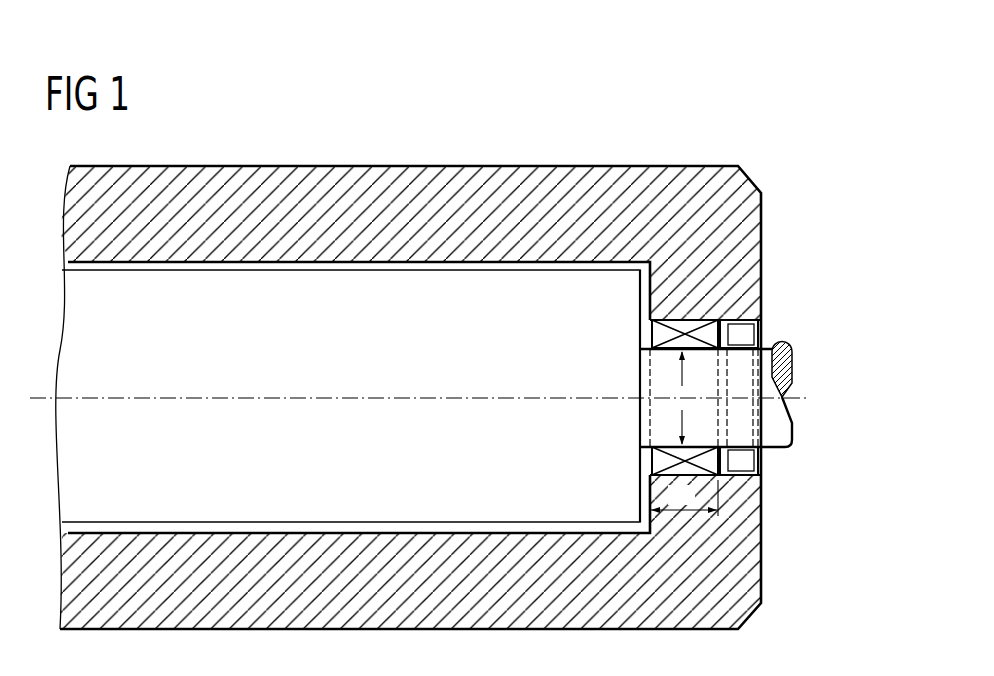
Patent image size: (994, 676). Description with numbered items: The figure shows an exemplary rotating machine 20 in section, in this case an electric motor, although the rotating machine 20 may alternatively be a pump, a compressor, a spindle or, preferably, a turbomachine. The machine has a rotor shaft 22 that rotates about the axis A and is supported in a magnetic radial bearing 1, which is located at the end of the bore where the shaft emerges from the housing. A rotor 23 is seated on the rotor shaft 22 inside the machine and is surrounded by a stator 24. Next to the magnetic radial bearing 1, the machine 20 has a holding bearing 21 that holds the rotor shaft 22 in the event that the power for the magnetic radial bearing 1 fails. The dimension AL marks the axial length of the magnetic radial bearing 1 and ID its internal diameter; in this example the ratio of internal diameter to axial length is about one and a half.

The magnetic radial bearing 1 is at (690, 318).
The rotating machine 20 is at (760, 153).
The holding bearing 21 is at (743, 320).
The rotor shaft 22 is at (775, 422).
The rotor 23 is at (305, 487).
The stator 24 is at (690, 165).